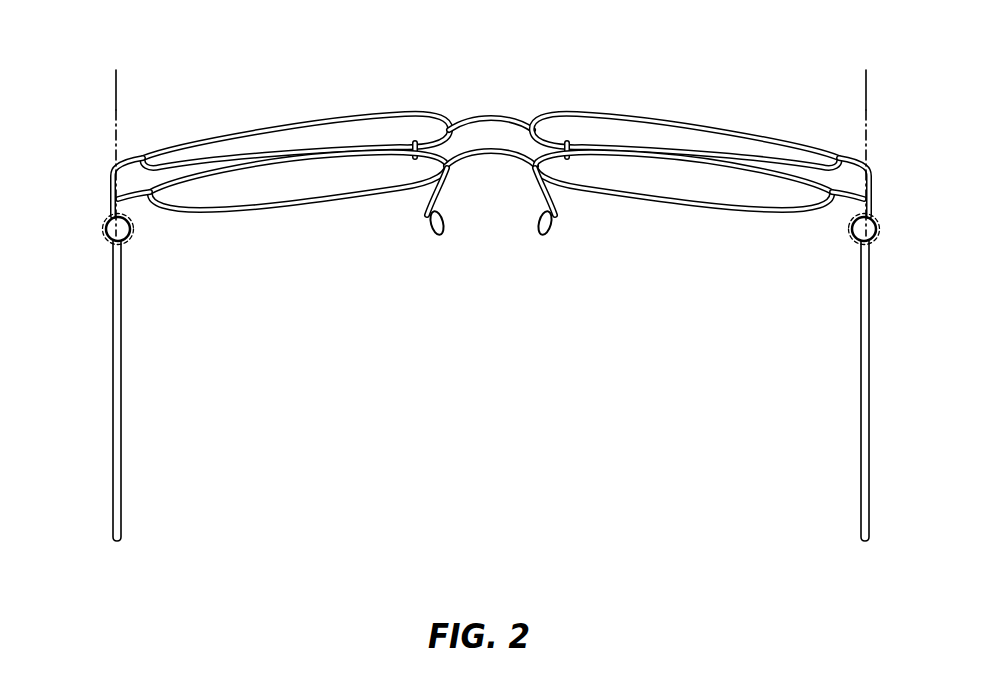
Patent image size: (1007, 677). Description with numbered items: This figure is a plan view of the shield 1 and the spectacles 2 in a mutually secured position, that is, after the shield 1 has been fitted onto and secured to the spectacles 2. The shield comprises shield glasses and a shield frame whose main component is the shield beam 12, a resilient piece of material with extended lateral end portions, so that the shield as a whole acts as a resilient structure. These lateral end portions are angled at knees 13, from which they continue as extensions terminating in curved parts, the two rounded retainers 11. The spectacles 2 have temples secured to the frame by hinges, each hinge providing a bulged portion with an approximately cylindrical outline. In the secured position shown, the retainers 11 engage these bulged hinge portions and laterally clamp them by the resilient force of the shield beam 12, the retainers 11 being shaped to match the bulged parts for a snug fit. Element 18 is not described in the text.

The shield 1 is at (188, 67).
The spectacles 2 is at (665, 378).
The retainer 11 is at (106, 229).
The shield beam 12 is at (497, 115).
The knee 13 is at (112, 158).
The lower frame end 18 is at (140, 202).